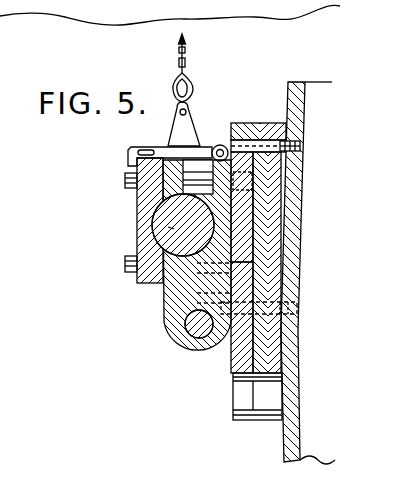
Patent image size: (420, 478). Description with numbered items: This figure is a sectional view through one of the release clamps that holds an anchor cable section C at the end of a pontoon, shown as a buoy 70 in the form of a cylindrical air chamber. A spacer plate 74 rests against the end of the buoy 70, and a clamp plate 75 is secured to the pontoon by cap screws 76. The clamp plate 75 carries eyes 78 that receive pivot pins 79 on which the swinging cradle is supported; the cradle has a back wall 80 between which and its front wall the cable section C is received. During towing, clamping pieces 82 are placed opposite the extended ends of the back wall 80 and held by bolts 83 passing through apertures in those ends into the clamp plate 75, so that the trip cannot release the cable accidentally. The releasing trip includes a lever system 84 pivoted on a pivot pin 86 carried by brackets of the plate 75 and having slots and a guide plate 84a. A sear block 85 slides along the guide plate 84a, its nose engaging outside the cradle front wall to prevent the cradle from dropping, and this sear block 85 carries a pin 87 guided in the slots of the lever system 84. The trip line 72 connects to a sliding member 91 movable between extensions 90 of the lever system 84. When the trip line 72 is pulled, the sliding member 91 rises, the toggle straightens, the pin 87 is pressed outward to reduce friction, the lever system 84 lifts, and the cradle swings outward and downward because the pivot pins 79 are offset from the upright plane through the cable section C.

The buoy 70 is at (294, 439).
The trip line 72 is at (187, 42).
The spacer plate 74 is at (270, 207).
The clamp plate 75 is at (247, 358).
The cap screws 76 is at (300, 146).
The eyes 78 is at (234, 350).
The pivot pins 79 is at (186, 336).
The back wall 80 is at (253, 232).
The clamping pieces 82 is at (148, 213).
The bolts 83 is at (126, 181).
The lever system 84 is at (212, 128).
The guide plate 84a is at (133, 148).
The sear block 85 is at (130, 158).
The pivot pin 86 is at (237, 133).
The pin 87 is at (150, 149).
The extensions 90 is at (187, 118).
The sliding member 91 is at (187, 78).
The cable section C is at (143, 236).